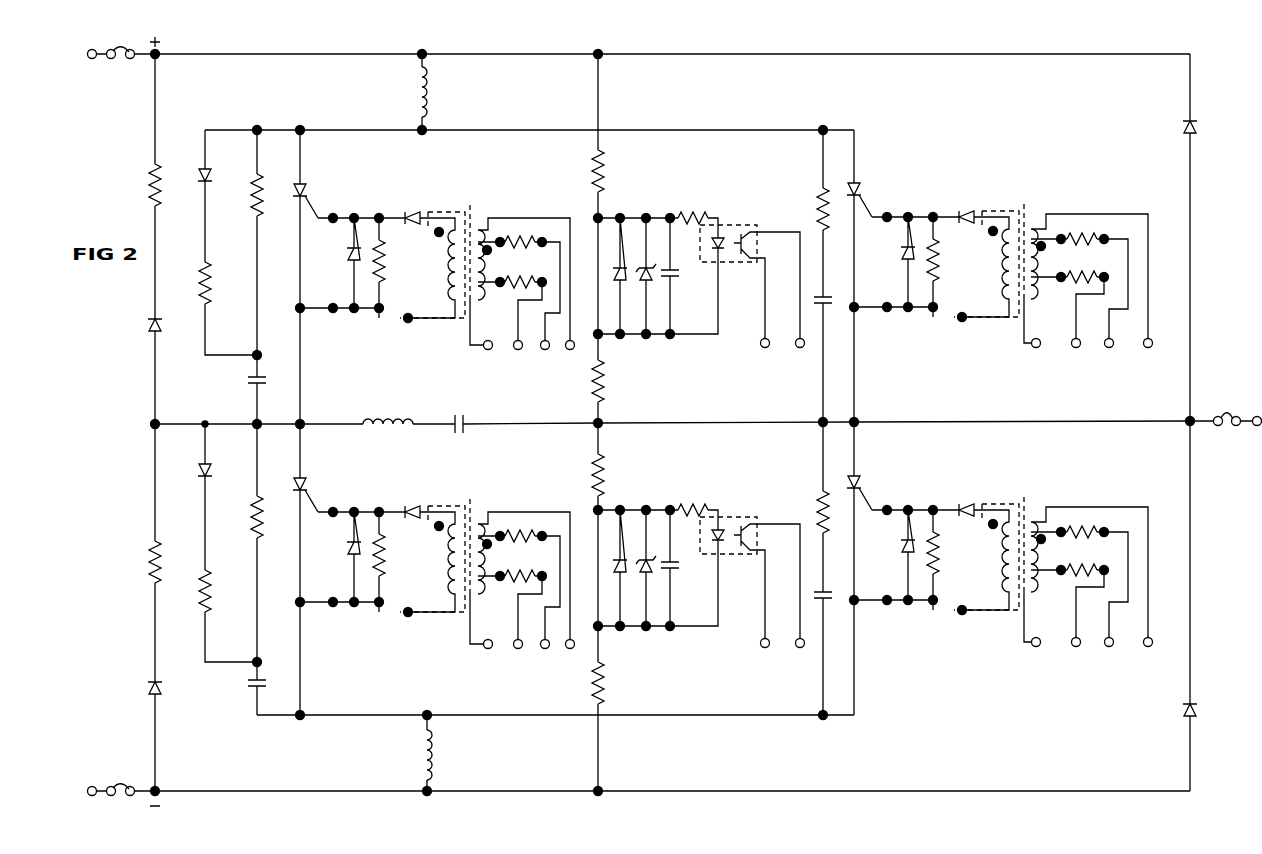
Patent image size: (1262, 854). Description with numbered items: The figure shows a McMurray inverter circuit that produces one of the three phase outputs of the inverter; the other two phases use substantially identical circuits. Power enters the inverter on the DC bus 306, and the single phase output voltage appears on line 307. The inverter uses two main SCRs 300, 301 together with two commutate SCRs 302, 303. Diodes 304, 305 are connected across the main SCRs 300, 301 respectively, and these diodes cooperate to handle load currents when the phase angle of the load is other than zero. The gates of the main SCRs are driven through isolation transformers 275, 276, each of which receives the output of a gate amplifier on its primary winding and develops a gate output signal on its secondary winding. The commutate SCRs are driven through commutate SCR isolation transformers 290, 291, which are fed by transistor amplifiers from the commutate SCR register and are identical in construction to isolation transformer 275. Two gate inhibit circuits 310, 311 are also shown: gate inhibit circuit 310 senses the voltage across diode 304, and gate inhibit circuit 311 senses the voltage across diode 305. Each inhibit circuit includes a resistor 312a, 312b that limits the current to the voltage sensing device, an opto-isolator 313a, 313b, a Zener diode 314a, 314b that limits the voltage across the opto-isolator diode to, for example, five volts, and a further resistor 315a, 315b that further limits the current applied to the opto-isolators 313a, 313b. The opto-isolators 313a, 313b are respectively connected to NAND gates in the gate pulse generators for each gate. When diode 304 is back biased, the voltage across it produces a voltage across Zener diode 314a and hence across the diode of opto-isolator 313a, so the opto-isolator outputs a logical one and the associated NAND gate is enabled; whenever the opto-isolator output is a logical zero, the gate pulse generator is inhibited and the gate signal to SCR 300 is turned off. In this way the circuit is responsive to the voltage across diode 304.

The isolation transformer 275 is at (1088, 263).
The isolation transformer 276 is at (1088, 555).
The commutate SCR isolation transformer 290 is at (435, 270).
The commutate SCR isolation transformer 291 is at (435, 566).
The main SCR 300 is at (935, 241).
The main SCR 301 is at (935, 539).
The commutate SCR 302 is at (210, 172).
The commutate SCR 303 is at (320, 490).
The diode 304 is at (1197, 127).
The diode 305 is at (1197, 710).
The DC bus 306 is at (112, 63).
The output line 307 is at (1228, 426).
The gate inhibit circuit 310 is at (705, 303).
The gate inhibit circuit 311 is at (705, 594).
The resistor 312a is at (604, 172).
The resistor 312b is at (604, 462).
The opto-isolator 313a is at (740, 220).
The opto-isolator 313b is at (740, 516).
The Zener diode 314a is at (663, 319).
The Zener diode 314b is at (660, 611).
The resistor 315a is at (700, 198).
The resistor 315b is at (701, 491).